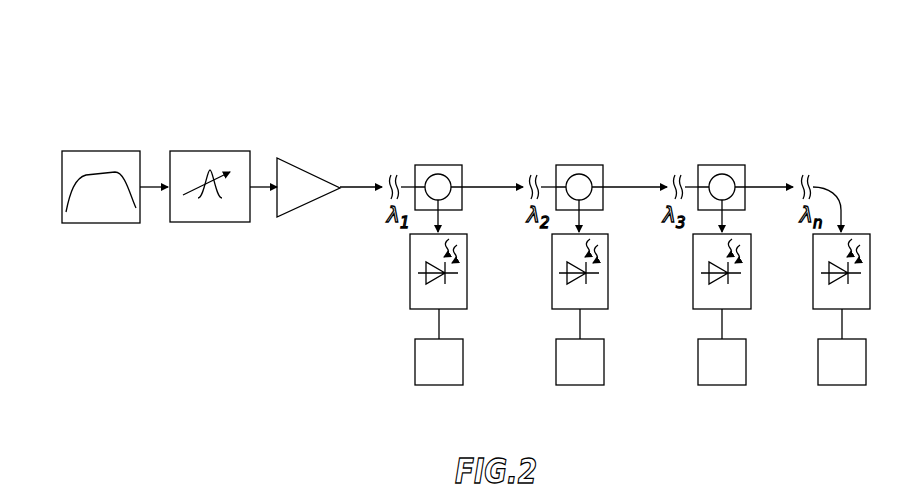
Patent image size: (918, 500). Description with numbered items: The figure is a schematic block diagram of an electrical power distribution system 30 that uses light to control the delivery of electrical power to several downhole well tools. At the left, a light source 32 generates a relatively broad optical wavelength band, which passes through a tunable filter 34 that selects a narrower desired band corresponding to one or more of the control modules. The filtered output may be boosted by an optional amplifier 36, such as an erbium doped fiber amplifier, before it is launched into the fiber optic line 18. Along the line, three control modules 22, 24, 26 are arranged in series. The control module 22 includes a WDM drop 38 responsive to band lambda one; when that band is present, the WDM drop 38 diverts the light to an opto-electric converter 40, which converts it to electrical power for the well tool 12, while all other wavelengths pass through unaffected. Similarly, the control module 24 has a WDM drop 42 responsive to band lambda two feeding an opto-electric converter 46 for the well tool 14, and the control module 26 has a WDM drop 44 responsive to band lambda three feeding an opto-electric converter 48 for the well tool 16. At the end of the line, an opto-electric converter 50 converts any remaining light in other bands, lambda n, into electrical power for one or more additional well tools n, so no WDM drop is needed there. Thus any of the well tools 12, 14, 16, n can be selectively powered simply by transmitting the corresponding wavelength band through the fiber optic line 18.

The electrical power distribution system 30 is at (704, 62).
The light source 32 is at (97, 151).
The tunable filter 34 is at (221, 151).
The amplifier 36 is at (307, 170).
The fiber optic line 18 is at (487, 187).
The control module 22 is at (437, 165).
The control module 24 is at (578, 165).
The control module 26 is at (722, 165).
The WDM drop 38 is at (448, 196).
The WDM drop 42 is at (589, 196).
The WDM drop 44 is at (733, 196).
The opto-electric converter 40 is at (410, 290).
The opto-electric converter 46 is at (608, 276).
The opto-electric converter 48 is at (751, 278).
The opto-electric converter 50 is at (813, 287).
The well tool 12 is at (439, 362).
The well tool 14 is at (580, 362).
The well tool 16 is at (722, 362).
The well tool n is at (842, 362).